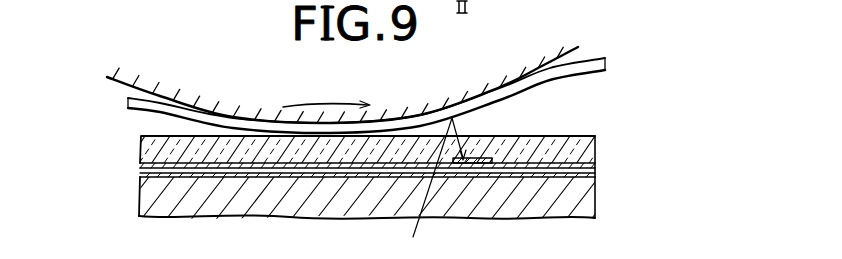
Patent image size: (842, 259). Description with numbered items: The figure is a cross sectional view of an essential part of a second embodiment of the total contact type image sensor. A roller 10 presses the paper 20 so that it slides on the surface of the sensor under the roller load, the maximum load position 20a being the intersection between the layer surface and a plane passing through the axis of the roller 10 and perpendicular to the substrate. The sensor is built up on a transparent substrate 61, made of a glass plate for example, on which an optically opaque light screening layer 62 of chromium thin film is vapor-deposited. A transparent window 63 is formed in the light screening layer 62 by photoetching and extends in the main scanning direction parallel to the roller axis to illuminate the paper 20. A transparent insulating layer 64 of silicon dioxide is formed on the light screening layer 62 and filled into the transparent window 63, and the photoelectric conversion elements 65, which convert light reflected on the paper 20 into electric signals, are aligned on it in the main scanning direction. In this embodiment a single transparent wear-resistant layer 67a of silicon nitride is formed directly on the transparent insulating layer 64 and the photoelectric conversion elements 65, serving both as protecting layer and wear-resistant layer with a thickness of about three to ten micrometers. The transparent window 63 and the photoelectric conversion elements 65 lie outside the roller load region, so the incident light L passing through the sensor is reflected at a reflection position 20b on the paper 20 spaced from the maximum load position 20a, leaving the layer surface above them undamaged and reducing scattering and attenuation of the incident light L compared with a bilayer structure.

The roller 10 is at (125, 84).
The paper 20 is at (587, 71).
The maximum load position 20a is at (324, 130).
The reflection position 20b is at (453, 118).
The transparent substrate 61 is at (560, 197).
The light screening layer 62 is at (597, 185).
The transparent window 63 is at (437, 178).
The transparent insulating layer 64 is at (597, 168).
The photoelectric conversion elements 65 is at (490, 182).
The transparent wear-resistant layer 67a is at (596, 150).
The incident light L is at (408, 249).